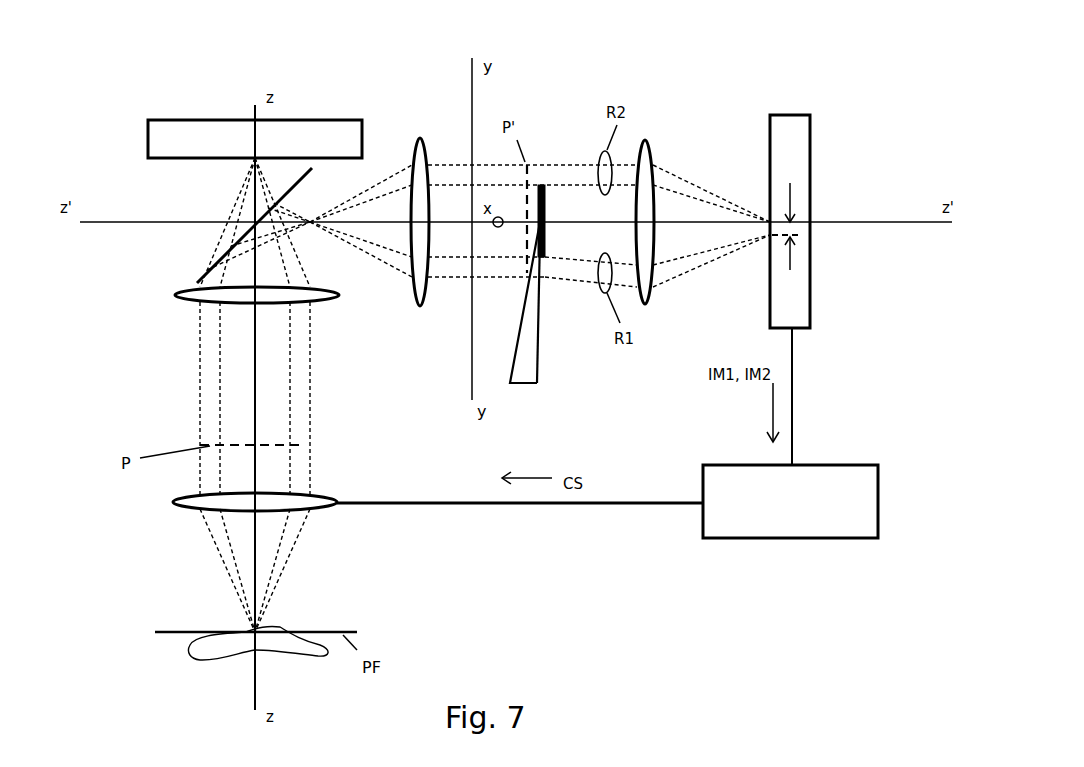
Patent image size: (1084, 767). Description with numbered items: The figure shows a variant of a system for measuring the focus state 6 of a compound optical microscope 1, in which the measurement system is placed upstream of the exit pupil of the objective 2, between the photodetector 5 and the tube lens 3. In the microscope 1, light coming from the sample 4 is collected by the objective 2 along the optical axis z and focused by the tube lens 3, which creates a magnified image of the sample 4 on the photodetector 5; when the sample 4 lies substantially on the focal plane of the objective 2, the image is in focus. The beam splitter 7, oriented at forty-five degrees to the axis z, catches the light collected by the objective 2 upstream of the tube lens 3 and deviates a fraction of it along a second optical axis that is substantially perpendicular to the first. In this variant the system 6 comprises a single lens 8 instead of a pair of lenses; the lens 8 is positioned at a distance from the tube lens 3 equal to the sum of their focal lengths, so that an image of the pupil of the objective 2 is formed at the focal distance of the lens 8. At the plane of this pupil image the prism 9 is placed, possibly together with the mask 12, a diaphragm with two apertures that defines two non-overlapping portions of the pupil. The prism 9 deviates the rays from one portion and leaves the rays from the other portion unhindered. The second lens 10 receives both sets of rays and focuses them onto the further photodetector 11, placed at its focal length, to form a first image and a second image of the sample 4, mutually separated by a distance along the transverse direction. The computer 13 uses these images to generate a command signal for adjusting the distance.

The compound optical microscope 1 is at (132, 127).
The objective 2 is at (183, 508).
The tube lens 3 is at (178, 298).
The sample 4 is at (188, 647).
The photodetector 5 is at (157, 158).
The system for measuring the focus state 6 is at (680, 62).
The beam splitter 7 is at (205, 268).
The lens 8 is at (422, 147).
The prism 9 is at (538, 360).
The second lens 10 is at (647, 140).
The further photodetector 11 is at (768, 128).
The mask 12 is at (541, 187).
The computer 13 is at (880, 498).